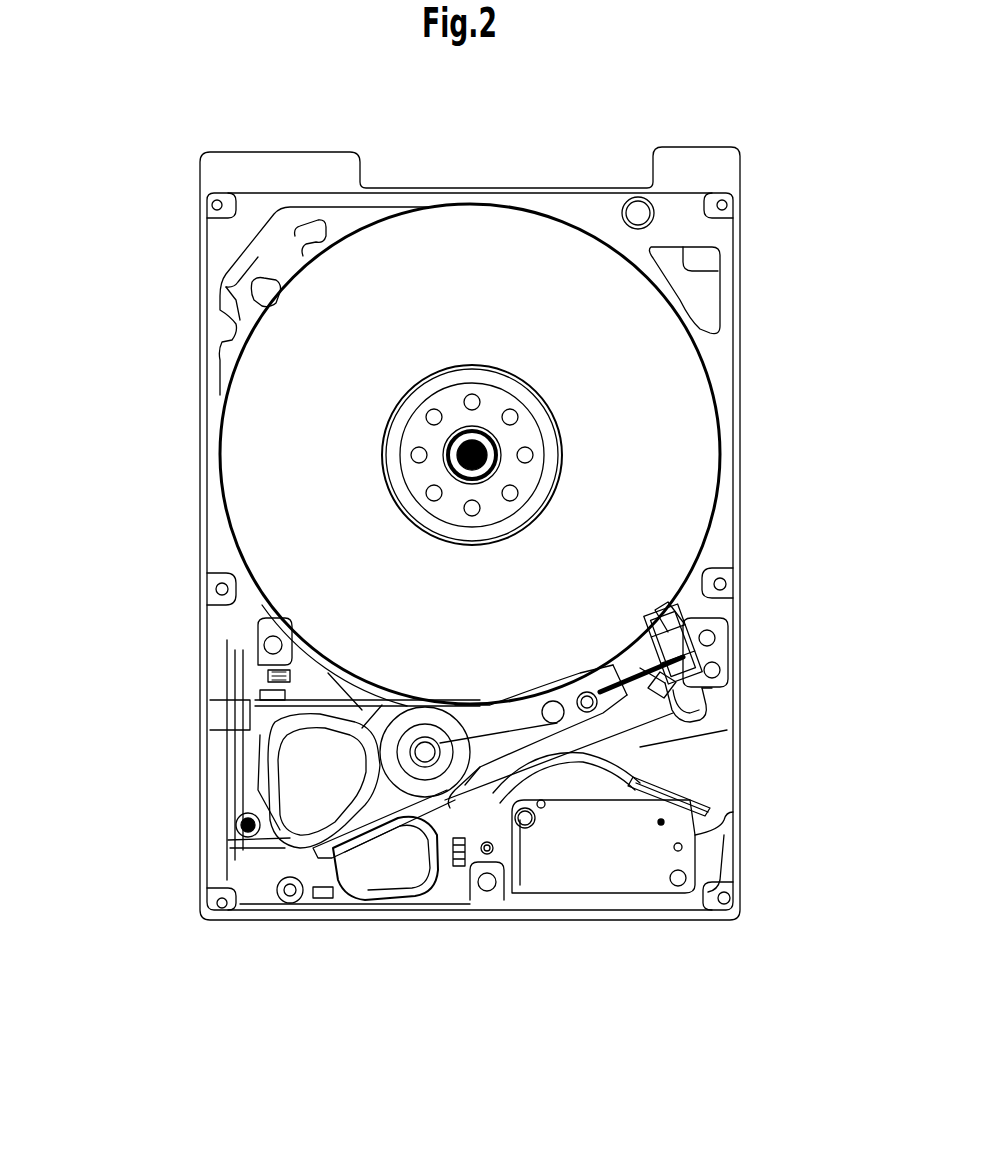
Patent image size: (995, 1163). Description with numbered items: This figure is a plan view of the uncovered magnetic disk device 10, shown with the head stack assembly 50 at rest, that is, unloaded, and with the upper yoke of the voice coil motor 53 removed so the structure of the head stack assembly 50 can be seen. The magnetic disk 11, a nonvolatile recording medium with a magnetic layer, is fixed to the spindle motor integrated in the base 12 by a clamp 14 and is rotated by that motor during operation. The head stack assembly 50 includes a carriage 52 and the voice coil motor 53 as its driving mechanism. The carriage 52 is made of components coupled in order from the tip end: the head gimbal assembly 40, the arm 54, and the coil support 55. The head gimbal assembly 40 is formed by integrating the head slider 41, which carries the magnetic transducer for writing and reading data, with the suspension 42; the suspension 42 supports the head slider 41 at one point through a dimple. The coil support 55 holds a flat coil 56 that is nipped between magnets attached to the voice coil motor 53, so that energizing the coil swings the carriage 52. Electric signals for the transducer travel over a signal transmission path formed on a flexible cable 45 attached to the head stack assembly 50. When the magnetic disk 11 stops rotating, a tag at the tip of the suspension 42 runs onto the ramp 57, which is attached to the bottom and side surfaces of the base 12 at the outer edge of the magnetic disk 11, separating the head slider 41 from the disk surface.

The magnetic disk device 10 is at (541, 161).
The magnetic disk 11 is at (685, 392).
The base 12 is at (397, 529).
The clamp 14 is at (500, 400).
The head gimbal assembly 40 is at (650, 690).
The head slider 41 is at (720, 722).
The suspension 42 is at (632, 652).
The flexible cable 45 is at (558, 793).
The head stack assembly 50 is at (427, 705).
The carriage 52 is at (487, 720).
The voice coil motor 53 is at (357, 880).
The arm 54 is at (537, 710).
The coil support 55 is at (358, 705).
The flat coil 56 is at (318, 738).
The ramp 57 is at (717, 655).